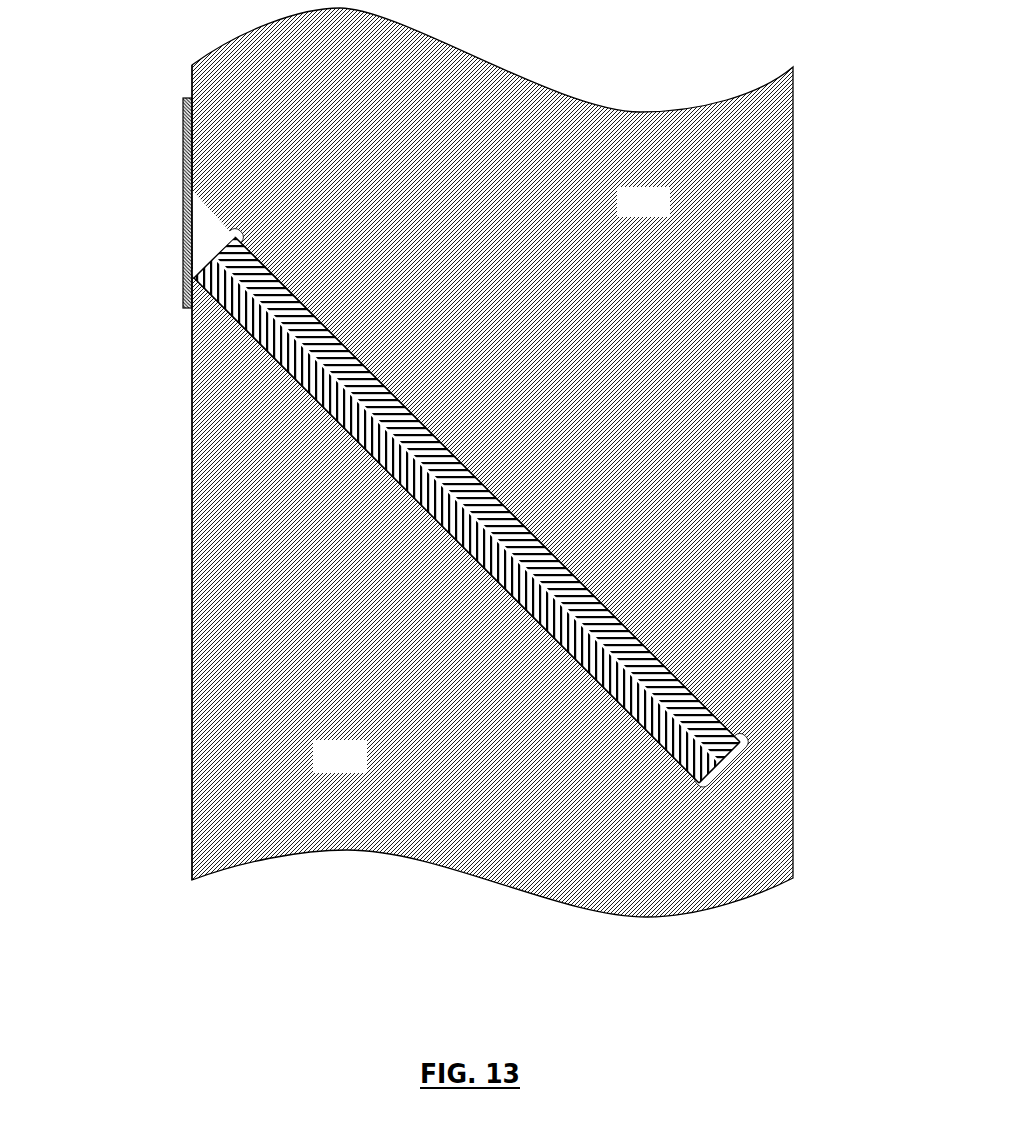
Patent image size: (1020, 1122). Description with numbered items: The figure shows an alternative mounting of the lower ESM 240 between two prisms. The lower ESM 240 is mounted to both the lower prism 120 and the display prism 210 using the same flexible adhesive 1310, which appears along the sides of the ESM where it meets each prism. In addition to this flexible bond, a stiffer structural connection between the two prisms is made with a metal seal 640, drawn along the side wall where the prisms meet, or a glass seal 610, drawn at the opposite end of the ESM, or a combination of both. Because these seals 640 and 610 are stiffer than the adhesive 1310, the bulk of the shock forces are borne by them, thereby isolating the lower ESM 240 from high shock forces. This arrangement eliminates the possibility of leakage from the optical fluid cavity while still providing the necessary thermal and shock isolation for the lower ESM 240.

The lower prism 120 is at (492, 462).
The display prism 210 is at (365, 770).
The lower ESM 240 is at (590, 590).
The glass seal 610 is at (750, 776).
The metal seal 640 is at (183, 177).
The flexible adhesive 1310 is at (265, 348).